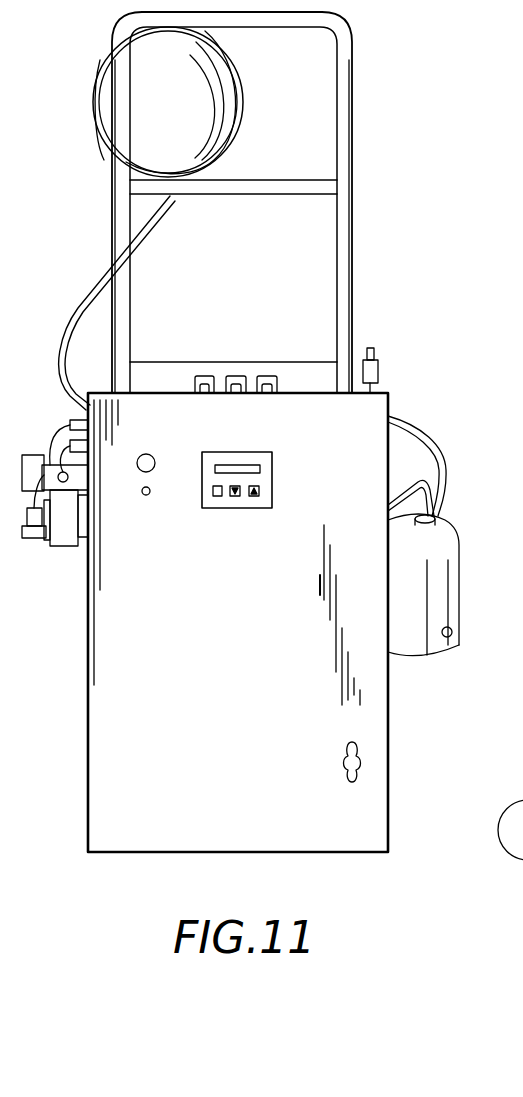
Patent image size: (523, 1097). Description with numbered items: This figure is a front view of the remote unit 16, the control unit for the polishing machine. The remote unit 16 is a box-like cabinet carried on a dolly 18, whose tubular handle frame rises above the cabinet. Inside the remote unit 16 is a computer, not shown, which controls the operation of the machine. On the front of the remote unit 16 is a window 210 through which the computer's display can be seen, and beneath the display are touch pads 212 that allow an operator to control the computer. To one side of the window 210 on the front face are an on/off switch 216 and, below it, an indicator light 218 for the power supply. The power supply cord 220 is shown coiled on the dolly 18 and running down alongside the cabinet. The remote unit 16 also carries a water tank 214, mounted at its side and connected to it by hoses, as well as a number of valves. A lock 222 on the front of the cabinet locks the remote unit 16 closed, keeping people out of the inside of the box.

The remote unit 16 is at (420, 406).
The dolly 18 is at (347, 284).
The window 210 is at (273, 497).
The touch pads 212 is at (240, 502).
The water tank 214 is at (448, 544).
The on/off switch 216 is at (148, 453).
The indicator light 218 is at (146, 495).
The power supply cord 220 is at (73, 307).
The lock 222 is at (360, 762).